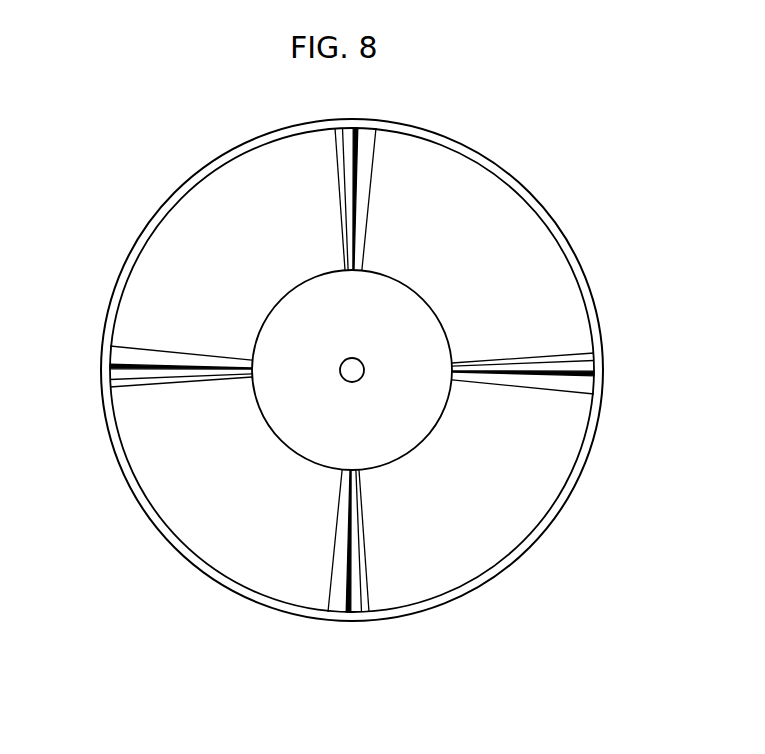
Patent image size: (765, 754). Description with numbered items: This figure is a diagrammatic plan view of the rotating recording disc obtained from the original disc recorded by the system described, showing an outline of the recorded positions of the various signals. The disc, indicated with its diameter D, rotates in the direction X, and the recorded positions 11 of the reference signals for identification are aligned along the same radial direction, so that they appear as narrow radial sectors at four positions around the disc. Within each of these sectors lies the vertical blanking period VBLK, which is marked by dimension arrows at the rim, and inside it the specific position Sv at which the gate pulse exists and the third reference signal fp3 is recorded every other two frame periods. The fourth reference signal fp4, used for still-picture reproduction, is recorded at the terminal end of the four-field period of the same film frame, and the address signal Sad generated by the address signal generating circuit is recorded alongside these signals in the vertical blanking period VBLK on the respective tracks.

The recorded positions of reference signals for identification 11 is at (452, 136).
The disc diameter D is at (557, 254).
The rotation direction X is at (176, 146).
The specific position in the vertical blanking period Sv is at (358, 159).
The address signal Sad is at (342, 150).
The third reference signal fp3 is at (357, 187).
The fourth reference signal fp4 is at (338, 575).
The vertical blanking period VBLK is at (377, 116).